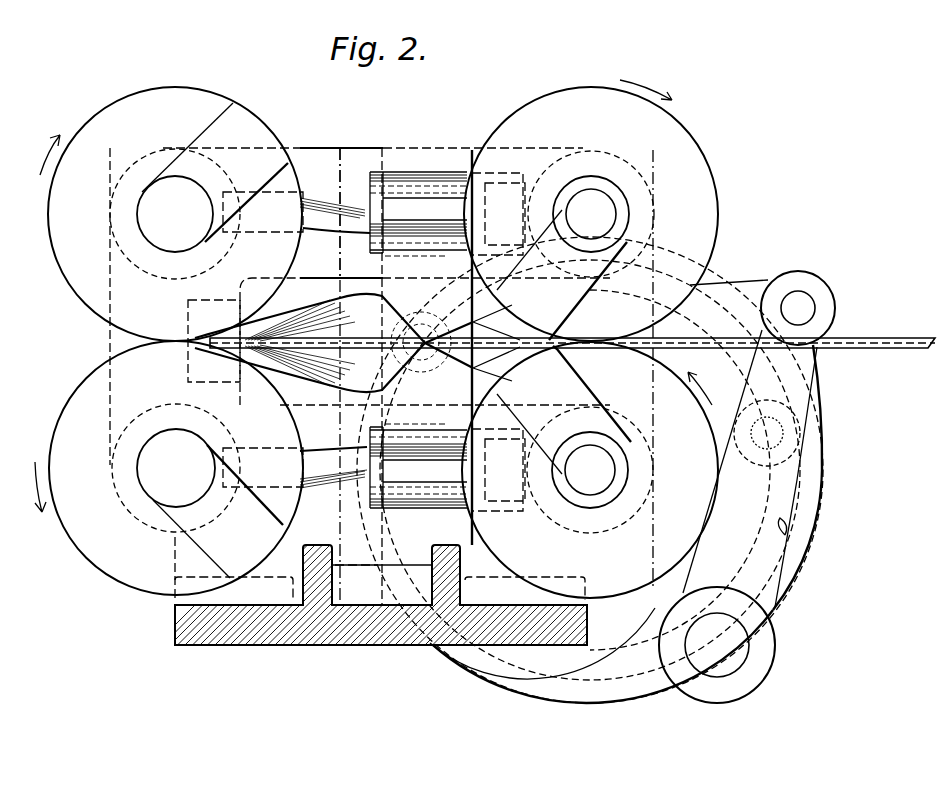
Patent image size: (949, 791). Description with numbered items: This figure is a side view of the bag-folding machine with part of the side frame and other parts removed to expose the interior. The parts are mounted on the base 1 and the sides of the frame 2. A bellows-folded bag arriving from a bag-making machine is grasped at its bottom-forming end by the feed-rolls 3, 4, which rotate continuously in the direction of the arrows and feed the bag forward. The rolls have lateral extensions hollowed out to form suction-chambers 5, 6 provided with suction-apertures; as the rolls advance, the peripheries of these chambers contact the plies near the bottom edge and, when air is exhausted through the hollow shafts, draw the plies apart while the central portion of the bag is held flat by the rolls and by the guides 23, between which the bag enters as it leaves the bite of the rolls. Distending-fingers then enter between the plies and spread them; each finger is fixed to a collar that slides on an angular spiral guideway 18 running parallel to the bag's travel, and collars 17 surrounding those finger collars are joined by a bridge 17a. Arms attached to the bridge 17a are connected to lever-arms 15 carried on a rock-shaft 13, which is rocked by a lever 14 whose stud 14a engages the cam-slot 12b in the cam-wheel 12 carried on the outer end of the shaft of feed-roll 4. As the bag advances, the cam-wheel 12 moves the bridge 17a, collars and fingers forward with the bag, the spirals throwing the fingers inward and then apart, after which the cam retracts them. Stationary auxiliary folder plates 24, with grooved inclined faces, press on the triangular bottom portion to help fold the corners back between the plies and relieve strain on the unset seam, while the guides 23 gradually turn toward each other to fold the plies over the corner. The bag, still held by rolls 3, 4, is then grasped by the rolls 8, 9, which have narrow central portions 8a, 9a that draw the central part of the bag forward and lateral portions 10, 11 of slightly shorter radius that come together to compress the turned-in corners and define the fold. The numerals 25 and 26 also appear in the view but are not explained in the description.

The base 1 is at (330, 628).
The sides of the frame 2 is at (381, 376).
The feed-roll 3 is at (591, 210).
The feed-roll 4 is at (590, 470).
The suction-chamber 5 is at (562, 275).
The suction-chamber 6 is at (564, 410).
The roll 8 is at (197, 85).
The narrow central portion 8a is at (167, 118).
The roll 9 is at (62, 530).
The narrow central portion 9a is at (142, 383).
The lateral portion 10 is at (215, 172).
The lateral portion 11 is at (218, 511).
The cam-wheel 12 is at (823, 455).
The cam-slot 12b is at (575, 665).
The rock-shaft 13 is at (717, 645).
The lever 14 is at (786, 530).
The stud 14a is at (778, 405).
The lever-arm 15 is at (778, 515).
The collar 17 is at (418, 340).
The bridge 17a is at (395, 268).
The angular spiral guideway 18 is at (322, 210).
The guides 23 is at (357, 343).
The auxiliary folder plates 24 is at (205, 350).
The guide plate 25 is at (352, 160).
The support 26 is at (355, 595).